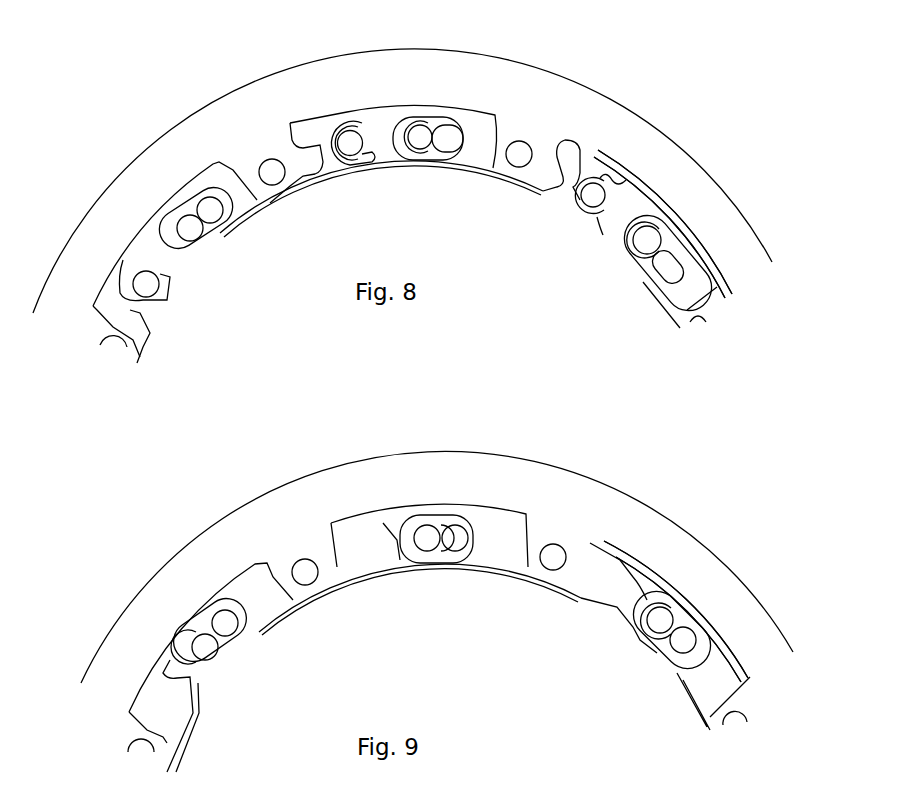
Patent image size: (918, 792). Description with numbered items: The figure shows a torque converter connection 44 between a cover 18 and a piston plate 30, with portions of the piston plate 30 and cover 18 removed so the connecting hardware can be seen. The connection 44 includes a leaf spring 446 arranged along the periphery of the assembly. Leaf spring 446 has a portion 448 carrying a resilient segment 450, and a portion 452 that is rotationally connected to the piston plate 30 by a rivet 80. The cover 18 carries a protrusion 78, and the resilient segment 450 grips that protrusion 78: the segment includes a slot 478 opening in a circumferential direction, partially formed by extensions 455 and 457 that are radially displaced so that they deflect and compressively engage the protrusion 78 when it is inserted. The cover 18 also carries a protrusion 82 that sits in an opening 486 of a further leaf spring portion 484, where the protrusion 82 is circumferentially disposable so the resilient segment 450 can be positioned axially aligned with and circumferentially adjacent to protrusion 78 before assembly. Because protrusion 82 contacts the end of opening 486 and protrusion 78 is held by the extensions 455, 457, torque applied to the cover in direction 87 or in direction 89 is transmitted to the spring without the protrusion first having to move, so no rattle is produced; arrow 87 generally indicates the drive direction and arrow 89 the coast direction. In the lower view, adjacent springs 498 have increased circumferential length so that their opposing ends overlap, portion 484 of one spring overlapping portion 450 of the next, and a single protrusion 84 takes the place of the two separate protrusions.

In FIG. 8, the cover 18 is at (211, 257).
In FIG. 9, the cover 18 is at (445, 659).
In FIG. 8, the piston plate 30 is at (131, 195).
In FIG. 9, the piston plate 30 is at (160, 588).
In FIG. 8, the torque converter connection 44 is at (577, 66).
In FIG. 9, the torque converter connection 44 is at (610, 476).
In FIG. 8, the protrusion 78 is at (604, 237).
In FIG. 8, the rivet 80 is at (520, 150).
In FIG. 9, the rivet 80 is at (549, 556).
In FIG. 8, the protrusion 82 is at (422, 138).
In FIG. 9, the protrusion 84 is at (432, 536).
In FIG. 8, the direction 87 is at (408, 330).
In FIG. 8, the direction 89 is at (560, 380).
In FIG. 8, the leaf spring 446 is at (211, 170).
In FIG. 9, the leaf spring 446 is at (497, 552).
In FIG. 8, the portion 448 is at (578, 146).
In FIG. 8, the resilient segment 450 is at (627, 164).
In FIG. 9, the resilient segment 450 is at (686, 596).
In FIG. 8, the portion 452 is at (512, 212).
In FIG. 9, the portion 452 is at (557, 622).
In FIG. 8, the extension 455 is at (616, 182).
In FIG. 8, the extension 457 is at (590, 223).
In FIG. 8, the slot 478 is at (616, 202).
In FIG. 8, the portion 484 is at (413, 106).
In FIG. 9, the portion 484 is at (431, 518).
In FIG. 8, the opening 486 is at (430, 140).
In FIG. 9, the opening 486 is at (444, 547).
In FIG. 9, the spring 498 is at (257, 597).